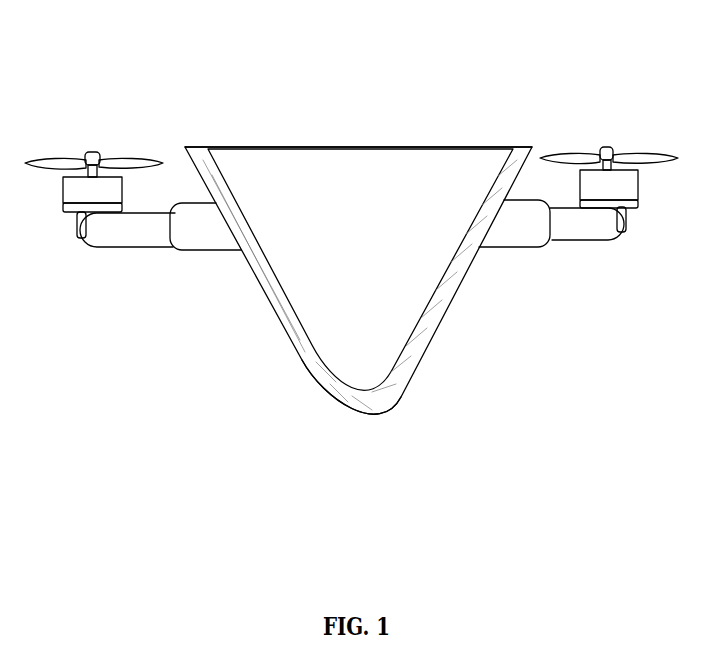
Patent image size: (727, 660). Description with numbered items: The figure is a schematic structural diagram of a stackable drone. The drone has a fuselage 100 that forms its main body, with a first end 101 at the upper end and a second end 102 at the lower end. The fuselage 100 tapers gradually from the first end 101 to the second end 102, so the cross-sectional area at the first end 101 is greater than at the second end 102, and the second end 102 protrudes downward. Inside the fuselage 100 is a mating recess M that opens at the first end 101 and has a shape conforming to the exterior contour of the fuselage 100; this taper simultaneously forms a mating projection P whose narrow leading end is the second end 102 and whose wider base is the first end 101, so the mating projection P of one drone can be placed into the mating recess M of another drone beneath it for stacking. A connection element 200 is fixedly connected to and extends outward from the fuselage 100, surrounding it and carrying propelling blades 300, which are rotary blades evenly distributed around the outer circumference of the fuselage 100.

The fuselage 100 is at (262, 281).
The first end 101 is at (530, 147).
The second end 102 is at (408, 383).
The connection element 200 is at (158, 220).
The propelling blades 300 is at (77, 210).
The mating recess M is at (349, 220).
The mating projection P is at (333, 418).